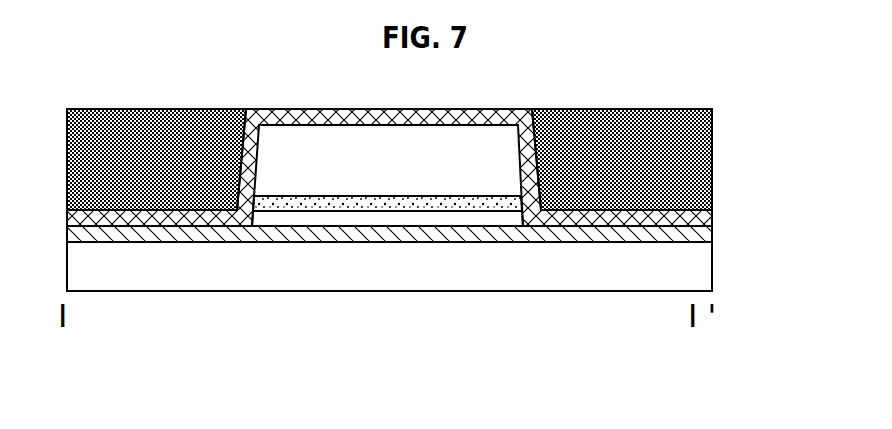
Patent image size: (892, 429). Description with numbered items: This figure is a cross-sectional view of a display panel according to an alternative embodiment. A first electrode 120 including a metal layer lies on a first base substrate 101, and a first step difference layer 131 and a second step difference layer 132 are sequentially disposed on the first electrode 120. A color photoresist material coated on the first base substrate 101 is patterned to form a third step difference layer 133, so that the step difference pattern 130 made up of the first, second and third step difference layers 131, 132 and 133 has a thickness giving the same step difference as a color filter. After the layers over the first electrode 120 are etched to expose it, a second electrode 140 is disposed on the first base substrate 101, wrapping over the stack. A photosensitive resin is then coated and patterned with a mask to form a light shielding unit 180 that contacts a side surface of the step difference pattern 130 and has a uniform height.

The first base substrate 101 is at (690, 265).
The first electrode 120 is at (187, 234).
The step difference pattern 130 is at (387, 271).
The first step difference layer 131 is at (435, 350).
The second step difference layer 132 is at (367, 202).
The third step difference layer 133 is at (440, 173).
The second electrode 140 is at (483, 115).
The light shielding unit 180 is at (680, 160).